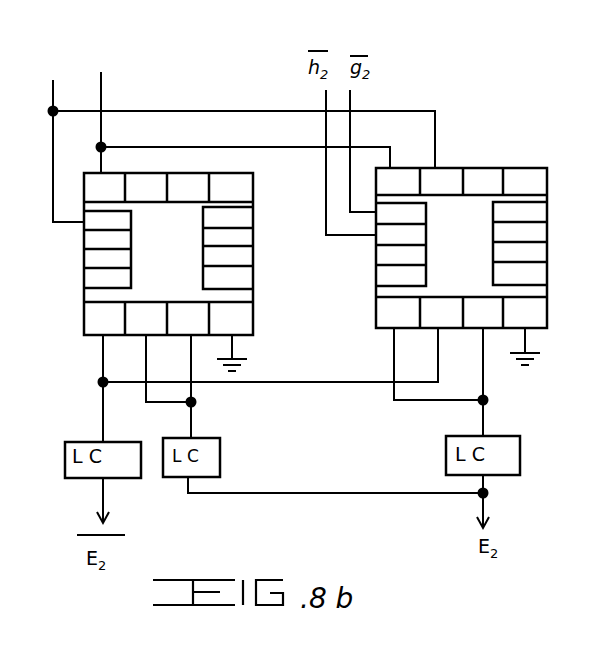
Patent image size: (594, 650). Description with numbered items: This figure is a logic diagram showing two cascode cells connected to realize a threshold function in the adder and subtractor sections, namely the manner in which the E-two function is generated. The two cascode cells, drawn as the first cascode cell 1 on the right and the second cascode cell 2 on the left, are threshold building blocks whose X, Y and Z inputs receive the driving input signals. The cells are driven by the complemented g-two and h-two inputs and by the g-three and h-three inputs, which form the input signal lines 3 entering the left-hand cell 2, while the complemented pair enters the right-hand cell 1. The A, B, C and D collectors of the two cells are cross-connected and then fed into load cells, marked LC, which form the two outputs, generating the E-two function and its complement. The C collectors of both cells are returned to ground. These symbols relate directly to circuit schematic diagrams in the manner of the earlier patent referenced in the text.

The first logic block 1 is at (461, 248).
The second logic block 2 is at (168, 254).
The input signal lines h3, g3 3 is at (238, 136).